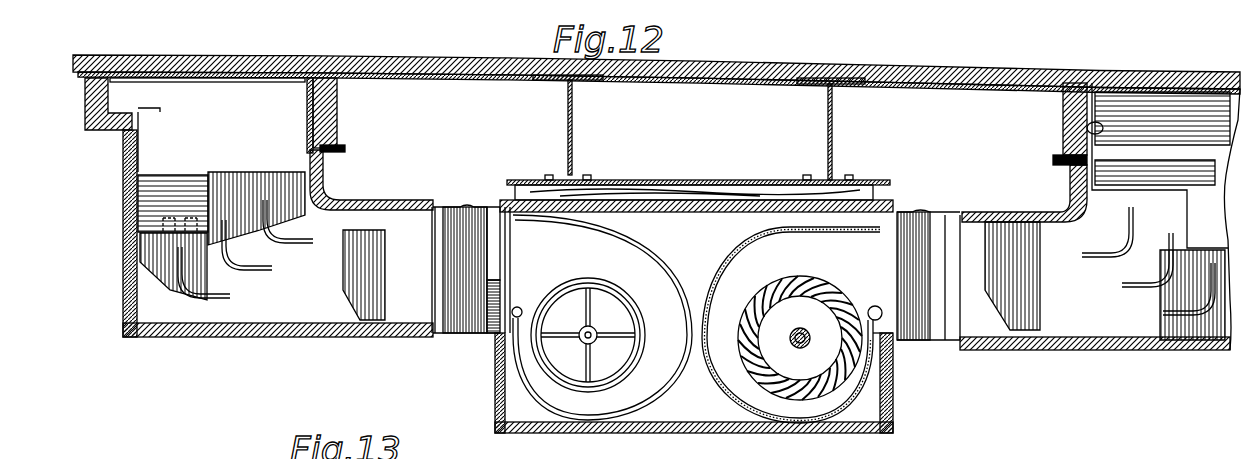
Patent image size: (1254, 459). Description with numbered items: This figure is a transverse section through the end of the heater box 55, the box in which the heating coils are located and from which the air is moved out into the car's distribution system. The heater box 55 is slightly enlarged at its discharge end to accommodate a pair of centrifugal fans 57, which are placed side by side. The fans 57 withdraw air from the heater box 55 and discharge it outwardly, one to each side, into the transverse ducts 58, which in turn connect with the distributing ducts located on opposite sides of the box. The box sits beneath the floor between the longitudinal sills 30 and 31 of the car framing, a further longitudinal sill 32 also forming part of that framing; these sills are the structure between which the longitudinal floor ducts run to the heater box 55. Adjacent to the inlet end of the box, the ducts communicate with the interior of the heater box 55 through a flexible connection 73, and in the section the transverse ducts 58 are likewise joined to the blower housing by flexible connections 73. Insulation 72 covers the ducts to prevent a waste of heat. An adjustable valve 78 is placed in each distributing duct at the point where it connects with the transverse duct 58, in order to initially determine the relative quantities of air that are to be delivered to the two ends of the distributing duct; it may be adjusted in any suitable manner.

The longitudinal sill 30 is at (573, 104).
The longitudinal sill 31 is at (337, 115).
The longitudinal sill 32 is at (137, 108).
The heater box 55 is at (702, 417).
The centrifugal fan 57 is at (772, 262).
The transverse duct 58 is at (681, 219).
The insulation 72 is at (363, 198).
The flexible connection 73 is at (467, 205).
The adjustable valve 78 is at (727, 165).